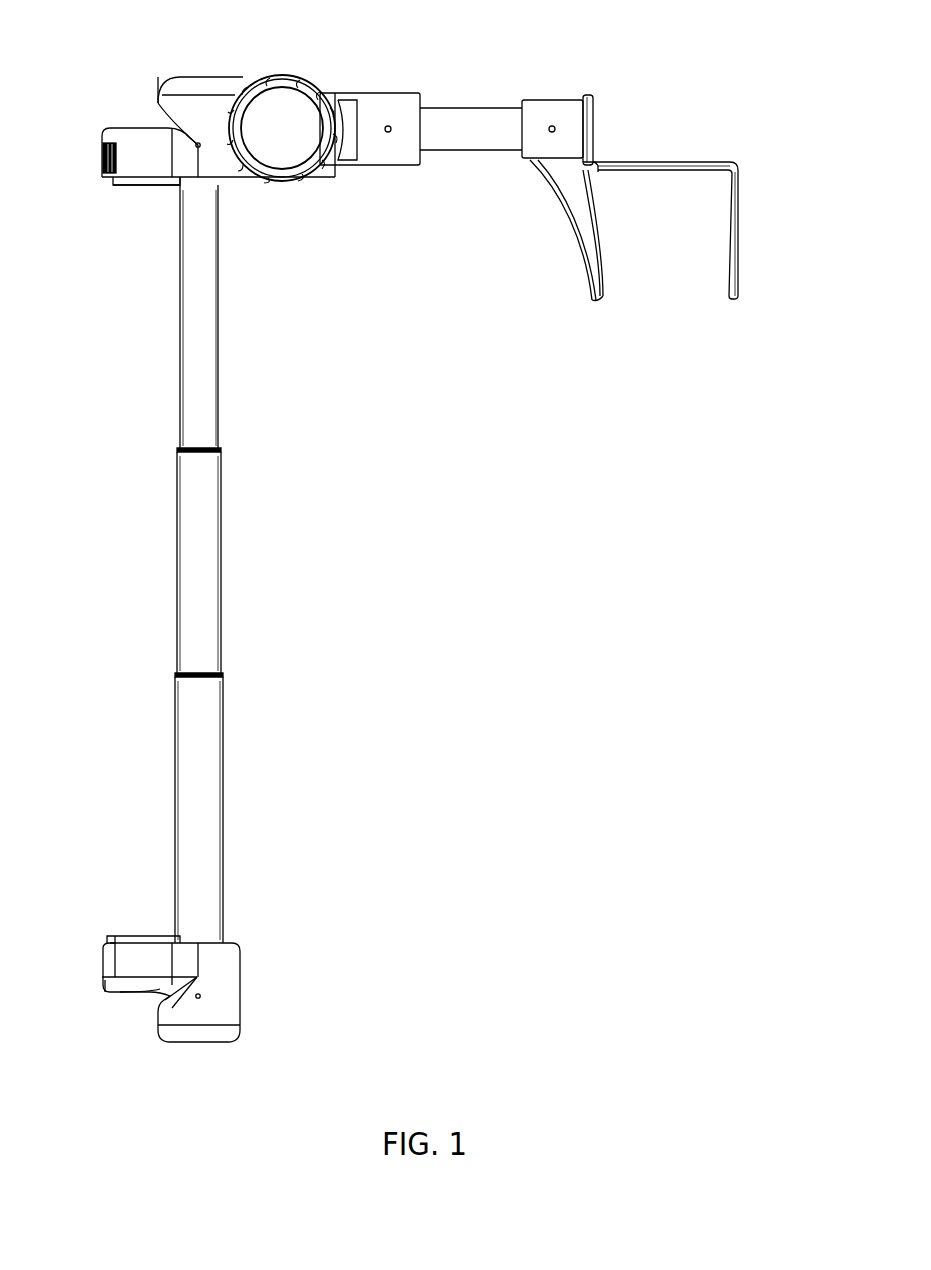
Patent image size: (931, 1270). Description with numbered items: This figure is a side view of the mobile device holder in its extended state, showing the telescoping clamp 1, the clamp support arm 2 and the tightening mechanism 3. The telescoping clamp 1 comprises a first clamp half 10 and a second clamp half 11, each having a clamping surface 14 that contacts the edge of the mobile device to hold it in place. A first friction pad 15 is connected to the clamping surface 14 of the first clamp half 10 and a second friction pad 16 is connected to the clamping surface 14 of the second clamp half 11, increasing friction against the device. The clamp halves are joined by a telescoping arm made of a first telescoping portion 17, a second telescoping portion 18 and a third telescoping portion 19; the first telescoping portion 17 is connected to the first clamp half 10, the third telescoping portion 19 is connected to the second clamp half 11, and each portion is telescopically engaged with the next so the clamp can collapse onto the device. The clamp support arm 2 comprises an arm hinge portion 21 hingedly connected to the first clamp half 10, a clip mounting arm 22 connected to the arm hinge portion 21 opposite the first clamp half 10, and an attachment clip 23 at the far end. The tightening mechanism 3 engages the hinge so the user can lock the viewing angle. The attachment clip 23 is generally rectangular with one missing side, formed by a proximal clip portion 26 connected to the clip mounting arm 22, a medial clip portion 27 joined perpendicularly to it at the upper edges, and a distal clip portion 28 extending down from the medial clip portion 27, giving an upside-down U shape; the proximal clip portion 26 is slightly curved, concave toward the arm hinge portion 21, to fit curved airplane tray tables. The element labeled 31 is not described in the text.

The telescoping clamp 1 is at (317, 977).
The clamp support arm 2 is at (637, 351).
The tightening mechanism 3 is at (313, 218).
The first clamp half 10 is at (108, 130).
The second clamp half 11 is at (112, 990).
The clamping surface 14 is at (108, 177).
The first friction pad 15 is at (137, 186).
The second friction pad 16 is at (135, 935).
The first telescoping portion 17 is at (203, 356).
The second telescoping portion 18 is at (203, 564).
The third telescoping portion 19 is at (208, 730).
The arm hinge portion 21 is at (375, 93).
The clip mounting arm 22 is at (470, 115).
The attachment clip 23 is at (652, 106).
The proximal clip portion 26 is at (610, 232).
The medial clip portion 27 is at (683, 162).
The distal clip portion 28 is at (738, 228).
The pivot ring 31 is at (287, 90).